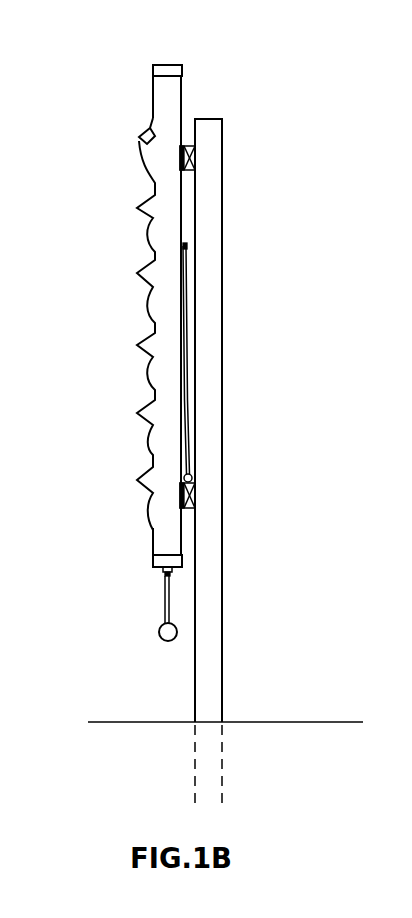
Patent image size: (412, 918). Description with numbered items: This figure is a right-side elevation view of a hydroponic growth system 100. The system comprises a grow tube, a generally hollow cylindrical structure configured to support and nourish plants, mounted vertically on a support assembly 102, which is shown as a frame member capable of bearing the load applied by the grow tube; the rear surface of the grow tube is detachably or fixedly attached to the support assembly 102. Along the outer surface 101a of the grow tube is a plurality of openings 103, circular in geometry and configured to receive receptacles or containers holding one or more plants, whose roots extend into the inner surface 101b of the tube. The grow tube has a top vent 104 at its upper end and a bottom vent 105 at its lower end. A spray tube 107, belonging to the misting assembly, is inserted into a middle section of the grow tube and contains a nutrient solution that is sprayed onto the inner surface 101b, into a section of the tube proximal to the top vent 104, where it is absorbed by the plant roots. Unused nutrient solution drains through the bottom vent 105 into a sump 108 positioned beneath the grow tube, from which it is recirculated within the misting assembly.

The hydroponic growth system 100 is at (310, 77).
The outer surface of the grow tube 101a is at (183, 117).
The inner surface of the grow tube 101b is at (165, 210).
The support assembly 102 is at (222, 443).
The openings 103 is at (143, 335).
The top vent 104 is at (168, 68).
The bottom vent 105 is at (157, 562).
The spray tubes 107 is at (188, 327).
The sump 108 is at (158, 636).